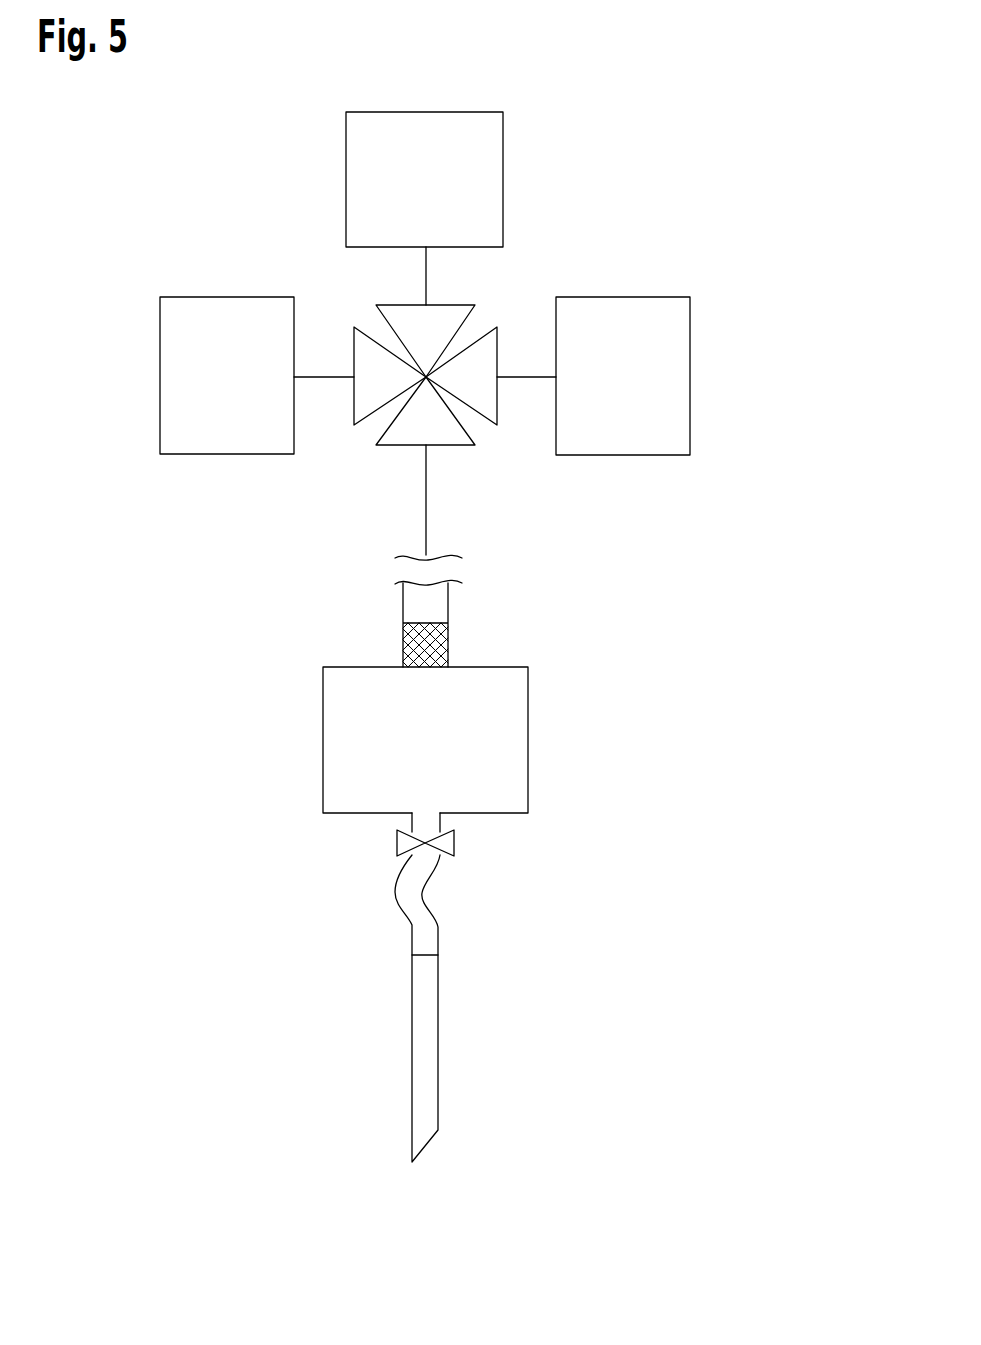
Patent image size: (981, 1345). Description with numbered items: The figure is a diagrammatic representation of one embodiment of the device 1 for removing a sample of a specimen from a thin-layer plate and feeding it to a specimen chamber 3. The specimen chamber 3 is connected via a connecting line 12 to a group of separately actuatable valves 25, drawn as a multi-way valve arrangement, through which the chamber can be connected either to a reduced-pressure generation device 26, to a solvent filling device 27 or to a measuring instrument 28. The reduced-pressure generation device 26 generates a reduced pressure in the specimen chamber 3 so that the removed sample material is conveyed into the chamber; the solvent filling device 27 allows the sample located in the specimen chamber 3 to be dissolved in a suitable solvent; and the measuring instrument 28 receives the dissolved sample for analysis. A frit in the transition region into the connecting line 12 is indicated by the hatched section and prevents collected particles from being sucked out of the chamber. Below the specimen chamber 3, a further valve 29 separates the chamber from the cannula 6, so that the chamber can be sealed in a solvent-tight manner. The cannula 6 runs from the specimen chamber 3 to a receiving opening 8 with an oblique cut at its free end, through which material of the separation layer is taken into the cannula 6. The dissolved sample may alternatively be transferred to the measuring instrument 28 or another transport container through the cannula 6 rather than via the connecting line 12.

The device 1 is at (661, 147).
The reduced-pressure generation device 26 is at (346, 172).
The measuring instrument 28 is at (160, 359).
The solvent filling device 27 is at (690, 358).
The valves 25 is at (455, 302).
The connecting line 12 is at (450, 602).
The specimen chamber 3 is at (528, 737).
The further valve 29 is at (456, 843).
The cannula 6 is at (438, 1032).
The receiving opening 8 is at (447, 1159).